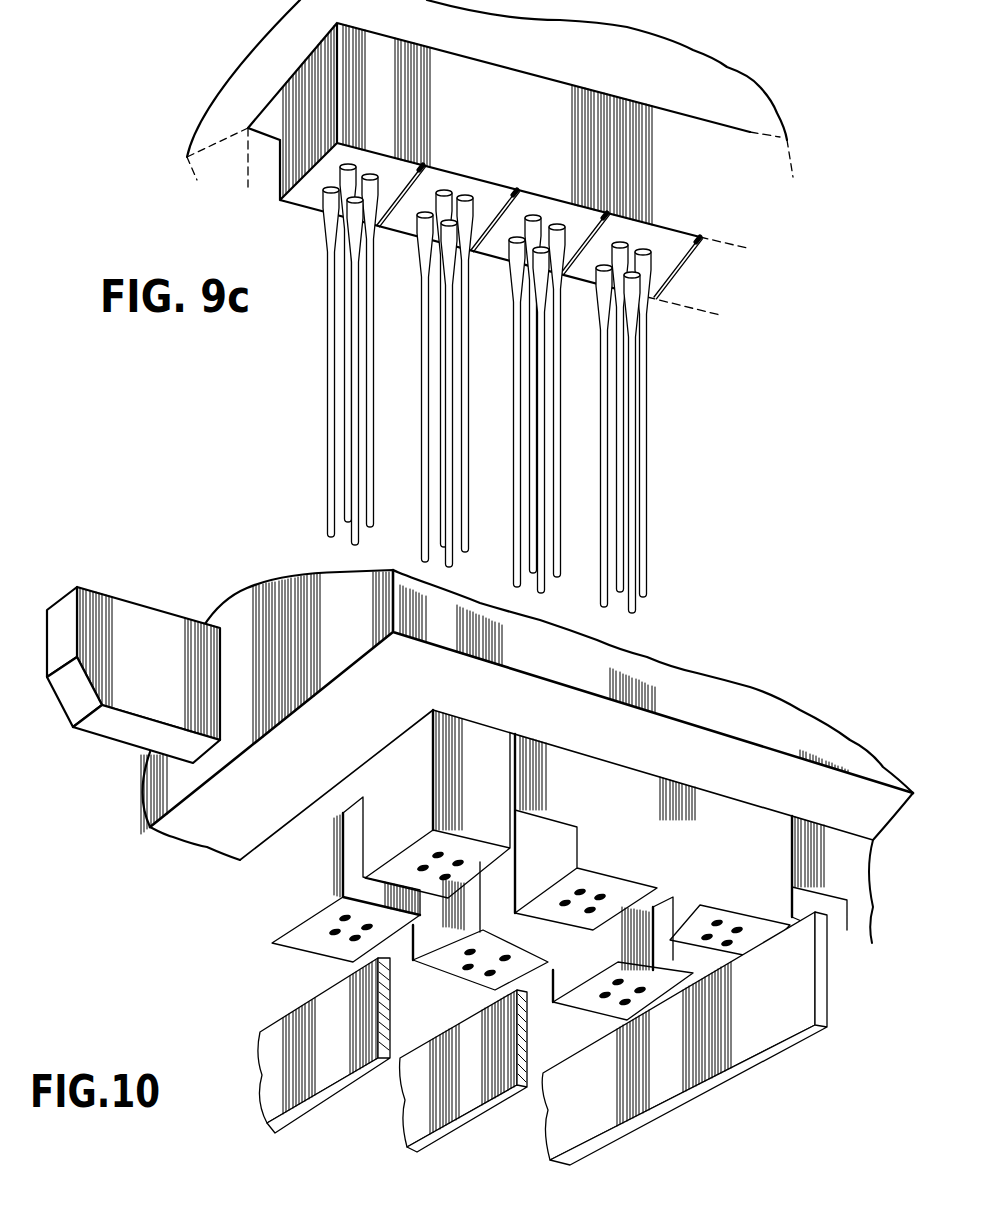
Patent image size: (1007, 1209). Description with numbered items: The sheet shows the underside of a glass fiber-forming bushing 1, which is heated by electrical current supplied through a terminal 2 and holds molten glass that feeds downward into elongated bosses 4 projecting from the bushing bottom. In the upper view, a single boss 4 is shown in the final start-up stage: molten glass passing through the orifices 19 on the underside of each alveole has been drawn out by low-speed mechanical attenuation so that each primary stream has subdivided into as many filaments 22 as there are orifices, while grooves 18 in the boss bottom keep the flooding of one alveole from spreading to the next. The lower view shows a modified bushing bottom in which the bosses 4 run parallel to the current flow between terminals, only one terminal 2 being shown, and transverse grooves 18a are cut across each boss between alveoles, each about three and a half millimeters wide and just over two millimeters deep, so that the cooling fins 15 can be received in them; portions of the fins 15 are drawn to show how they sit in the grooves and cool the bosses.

In FIG. 10, the bushing 1 is at (546, 662).
In FIG. 10, the terminal 2 is at (163, 637).
In FIG. 9c, the boss 4 is at (481, 135).
In FIG. 10, the fin 15 is at (697, 1112).
In FIG. 9c, the groove 18 is at (440, 180).
In FIG. 10, the transverse groove 18a is at (563, 980).
In FIG. 10, the orifice 19 is at (720, 945).
In FIG. 9c, the filament 22 is at (663, 478).